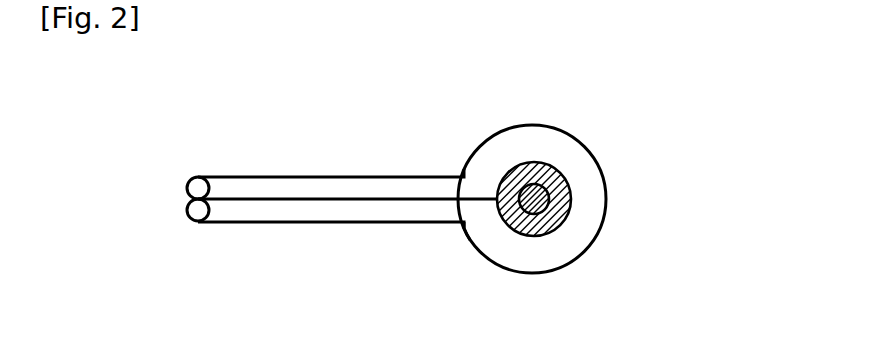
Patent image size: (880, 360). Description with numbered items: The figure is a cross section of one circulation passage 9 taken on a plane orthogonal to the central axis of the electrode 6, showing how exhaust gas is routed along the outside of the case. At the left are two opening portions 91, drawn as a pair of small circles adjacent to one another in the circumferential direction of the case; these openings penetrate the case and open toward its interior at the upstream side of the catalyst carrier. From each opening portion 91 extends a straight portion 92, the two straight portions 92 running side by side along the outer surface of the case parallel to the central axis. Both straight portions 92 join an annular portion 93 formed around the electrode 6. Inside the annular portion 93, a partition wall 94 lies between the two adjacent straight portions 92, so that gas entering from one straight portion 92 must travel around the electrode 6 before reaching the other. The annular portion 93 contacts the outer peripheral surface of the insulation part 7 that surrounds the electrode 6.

The circulation passage 9 is at (425, 202).
The opening portion 91 is at (193, 186).
The straight portion 92 is at (320, 186).
The annular portion 93 is at (490, 155).
The partition wall 94 is at (481, 210).
The electrode 6 is at (556, 173).
The insulation part 7 is at (560, 226).